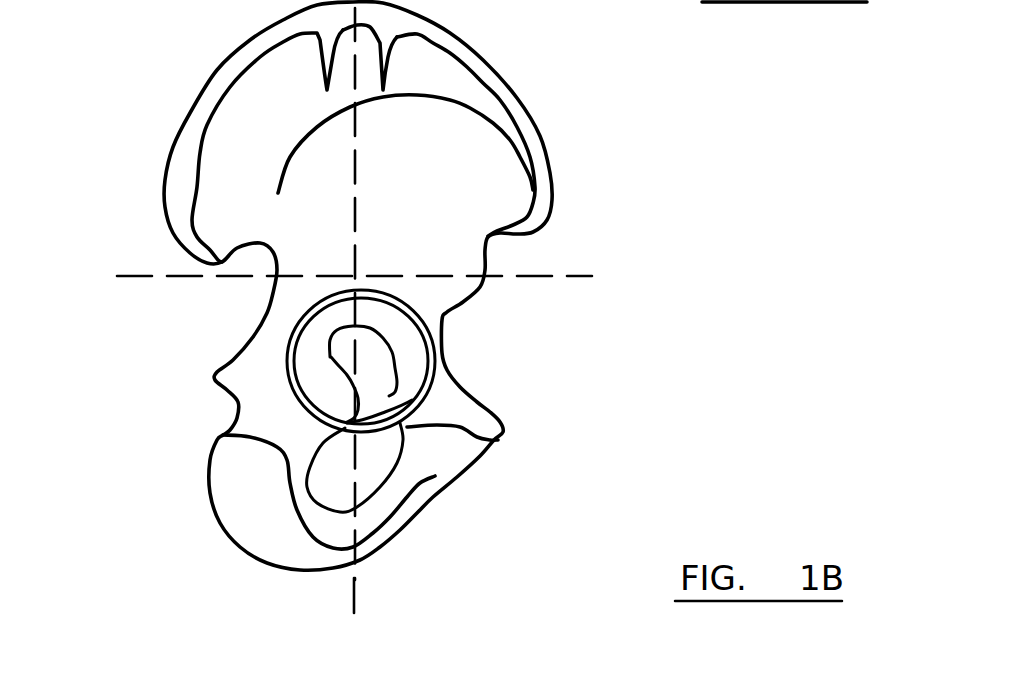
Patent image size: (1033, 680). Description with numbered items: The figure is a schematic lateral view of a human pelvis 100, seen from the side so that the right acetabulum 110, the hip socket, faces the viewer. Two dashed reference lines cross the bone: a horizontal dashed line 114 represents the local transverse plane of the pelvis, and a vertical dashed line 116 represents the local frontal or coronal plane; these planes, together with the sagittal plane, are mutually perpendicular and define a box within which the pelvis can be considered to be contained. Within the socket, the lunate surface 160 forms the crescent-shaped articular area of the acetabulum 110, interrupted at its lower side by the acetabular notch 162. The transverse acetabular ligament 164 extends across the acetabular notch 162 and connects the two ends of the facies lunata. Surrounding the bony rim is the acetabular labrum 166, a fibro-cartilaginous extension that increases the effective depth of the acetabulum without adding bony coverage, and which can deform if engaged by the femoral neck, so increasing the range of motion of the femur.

The human pelvis 100 is at (544, 112).
The right acetabulum 110 is at (281, 329).
The dashed line representing the local transverse plane 114 is at (132, 275).
The dashed line representing the local frontal or coronal plane 116 is at (354, 593).
The lunate surface 160 is at (398, 333).
The acetabular notch 162 is at (371, 388).
The transverse acetabular ligament 164 is at (360, 433).
The acetabular labrum 166 is at (424, 370).